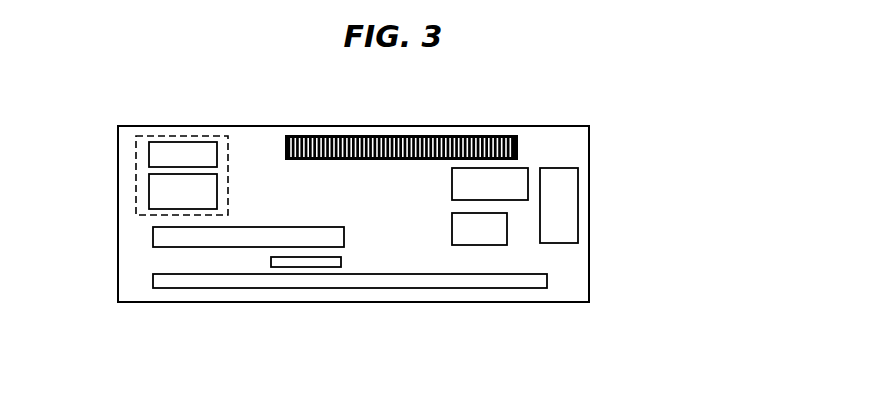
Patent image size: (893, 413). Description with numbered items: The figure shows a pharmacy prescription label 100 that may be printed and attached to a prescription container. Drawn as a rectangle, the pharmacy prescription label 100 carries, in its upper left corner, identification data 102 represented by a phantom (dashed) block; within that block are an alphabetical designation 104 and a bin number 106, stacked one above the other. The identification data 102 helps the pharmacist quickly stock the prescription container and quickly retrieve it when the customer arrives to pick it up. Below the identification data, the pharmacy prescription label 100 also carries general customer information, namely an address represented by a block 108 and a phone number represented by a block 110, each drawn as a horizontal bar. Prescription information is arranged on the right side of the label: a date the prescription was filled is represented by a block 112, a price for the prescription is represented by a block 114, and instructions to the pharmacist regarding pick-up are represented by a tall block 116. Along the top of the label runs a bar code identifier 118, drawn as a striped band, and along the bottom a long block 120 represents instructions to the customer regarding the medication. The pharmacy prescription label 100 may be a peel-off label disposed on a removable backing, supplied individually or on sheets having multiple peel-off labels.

The pharmacy prescription label 100 is at (592, 84).
The identification data 102 is at (143, 143).
The alphabetical designation 104 is at (162, 188).
The bin number 106 is at (210, 152).
The address block 108 is at (165, 237).
The phone number block 110 is at (318, 262).
The fill date block 112 is at (497, 237).
The price block 114 is at (513, 177).
The pharmacist pick-up instructions block 116 is at (563, 208).
The bar code identifier 118 is at (520, 146).
The customer medication instructions block 120 is at (497, 279).